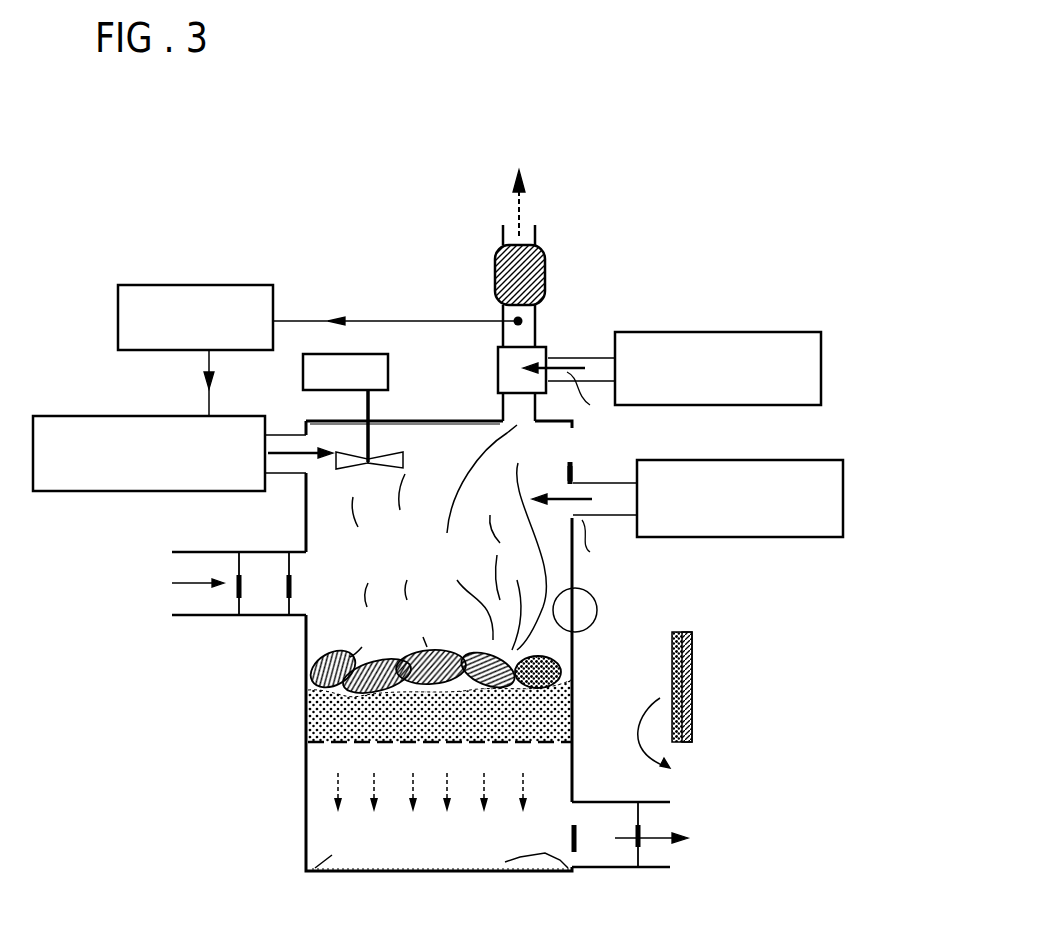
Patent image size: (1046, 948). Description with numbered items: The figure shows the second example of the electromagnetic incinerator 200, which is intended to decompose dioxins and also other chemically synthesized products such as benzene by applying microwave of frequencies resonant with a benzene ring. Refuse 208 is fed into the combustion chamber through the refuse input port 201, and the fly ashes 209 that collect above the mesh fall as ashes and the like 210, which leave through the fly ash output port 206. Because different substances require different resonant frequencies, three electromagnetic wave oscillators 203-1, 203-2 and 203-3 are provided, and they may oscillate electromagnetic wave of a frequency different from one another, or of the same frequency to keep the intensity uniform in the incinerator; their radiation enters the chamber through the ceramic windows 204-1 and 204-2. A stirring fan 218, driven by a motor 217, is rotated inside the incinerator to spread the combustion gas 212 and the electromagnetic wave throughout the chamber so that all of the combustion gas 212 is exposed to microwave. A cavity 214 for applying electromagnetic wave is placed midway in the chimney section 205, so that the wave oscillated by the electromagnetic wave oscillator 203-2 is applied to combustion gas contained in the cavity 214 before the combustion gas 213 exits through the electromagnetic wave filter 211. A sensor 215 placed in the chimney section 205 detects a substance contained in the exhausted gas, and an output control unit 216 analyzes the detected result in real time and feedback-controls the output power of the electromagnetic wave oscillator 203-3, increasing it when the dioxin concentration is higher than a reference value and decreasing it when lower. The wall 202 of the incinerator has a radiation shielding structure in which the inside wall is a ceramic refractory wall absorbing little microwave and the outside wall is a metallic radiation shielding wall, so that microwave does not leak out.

The electromagnetic incinerator 200 is at (143, 197).
The refuse input port having double doors 201 is at (187, 625).
The wall 202 is at (646, 629).
The electromagnetic wave oscillator 203-1 is at (846, 491).
The electromagnetic wave oscillator 203-2 is at (680, 332).
The electromagnetic wave oscillator 203-3 is at (215, 416).
The ceramic window 204-1 is at (564, 481).
The ceramic window 204-2 is at (636, 333).
The chimney section 205 is at (540, 247).
The fly ash output port having double doors 206 is at (607, 862).
The refuse 208 is at (432, 654).
The fly ashes 209 is at (440, 718).
The ashes and the like 210 is at (452, 827).
The electromagnetic wave filter 211 is at (547, 258).
The combustion gas 212 is at (400, 521).
The combustion gas 213 is at (551, 182).
The cavity for applying electromagnetic wave 214 is at (405, 374).
The sensor 215 is at (398, 307).
The output control unit 216 is at (197, 337).
The motor 217 is at (306, 354).
The stirring fan 218 is at (388, 446).